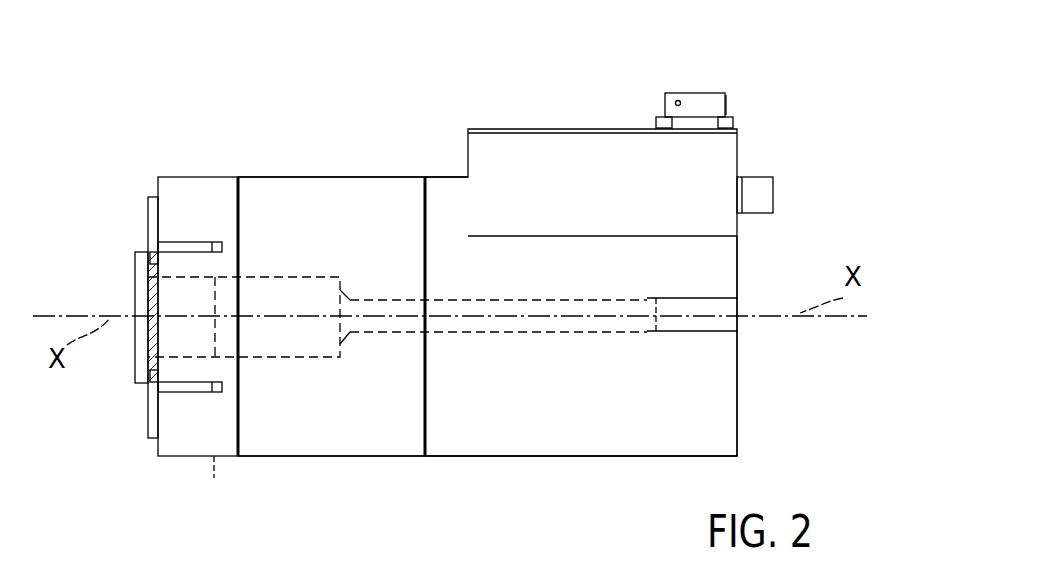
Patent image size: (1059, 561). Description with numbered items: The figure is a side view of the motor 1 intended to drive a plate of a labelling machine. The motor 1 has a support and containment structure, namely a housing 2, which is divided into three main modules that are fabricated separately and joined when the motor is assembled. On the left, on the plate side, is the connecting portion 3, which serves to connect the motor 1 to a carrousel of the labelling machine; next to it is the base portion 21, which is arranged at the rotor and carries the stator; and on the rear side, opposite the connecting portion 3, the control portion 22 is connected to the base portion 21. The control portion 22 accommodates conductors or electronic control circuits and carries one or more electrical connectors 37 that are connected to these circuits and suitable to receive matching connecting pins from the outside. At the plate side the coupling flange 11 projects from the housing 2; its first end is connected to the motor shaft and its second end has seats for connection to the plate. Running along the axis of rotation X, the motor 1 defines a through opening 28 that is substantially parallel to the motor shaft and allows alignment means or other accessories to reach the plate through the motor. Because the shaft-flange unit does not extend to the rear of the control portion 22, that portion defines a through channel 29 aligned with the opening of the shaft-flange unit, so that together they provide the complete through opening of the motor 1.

The motor 1 is at (381, 140).
The housing 2 is at (300, 188).
The connecting portion 3 is at (182, 188).
The coupling flange 11 is at (147, 297).
The base portion 21 is at (328, 437).
The control portion 22 is at (605, 425).
The through opening 28 is at (497, 320).
The through channel 29 is at (707, 308).
The connector 37 is at (697, 107).